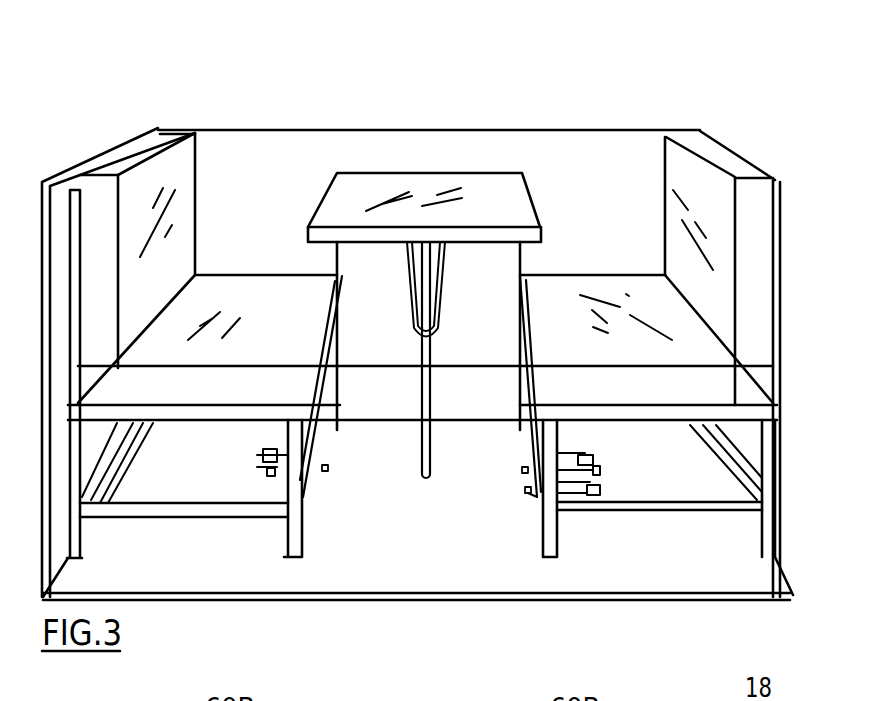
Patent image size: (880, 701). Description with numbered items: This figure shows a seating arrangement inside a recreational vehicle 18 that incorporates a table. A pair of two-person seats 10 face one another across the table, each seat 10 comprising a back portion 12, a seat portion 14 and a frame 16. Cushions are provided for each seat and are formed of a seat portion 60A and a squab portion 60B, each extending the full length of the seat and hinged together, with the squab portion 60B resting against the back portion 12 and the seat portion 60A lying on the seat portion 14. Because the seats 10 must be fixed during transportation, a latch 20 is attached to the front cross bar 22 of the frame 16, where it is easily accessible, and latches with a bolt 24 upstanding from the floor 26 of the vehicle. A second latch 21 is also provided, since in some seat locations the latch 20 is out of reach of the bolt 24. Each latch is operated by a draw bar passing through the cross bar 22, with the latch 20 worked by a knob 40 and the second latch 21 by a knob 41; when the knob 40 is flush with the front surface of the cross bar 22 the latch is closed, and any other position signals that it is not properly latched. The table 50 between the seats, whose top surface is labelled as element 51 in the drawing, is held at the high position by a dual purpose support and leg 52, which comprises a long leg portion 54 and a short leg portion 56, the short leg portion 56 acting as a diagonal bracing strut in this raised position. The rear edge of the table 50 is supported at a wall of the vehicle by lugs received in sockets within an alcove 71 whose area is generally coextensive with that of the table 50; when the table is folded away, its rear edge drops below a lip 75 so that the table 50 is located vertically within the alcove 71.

The two-person seat 10 is at (233, 290).
The back portion 12 is at (88, 227).
The seat portion 14 is at (268, 356).
The frame 16 is at (288, 555).
The recreational vehicle 18 is at (715, 98).
The latch 20 is at (593, 470).
The second latch 21 is at (255, 465).
The front cross bar 22 is at (520, 447).
The bolt 24 is at (267, 453).
The floor 26 is at (388, 577).
The knob 40 is at (328, 468).
The knob 41 is at (527, 490).
The table 50 is at (412, 183).
The table top edge 51 is at (457, 232).
The dual purpose support and leg 52 is at (420, 380).
The long leg portion 54 is at (432, 427).
The short leg portion 56 is at (442, 320).
The seat portion of cushion 60A is at (558, 290).
The squab portion of cushion 60B is at (187, 170).
The alcove 71 is at (392, 262).
The lip 75 is at (392, 383).